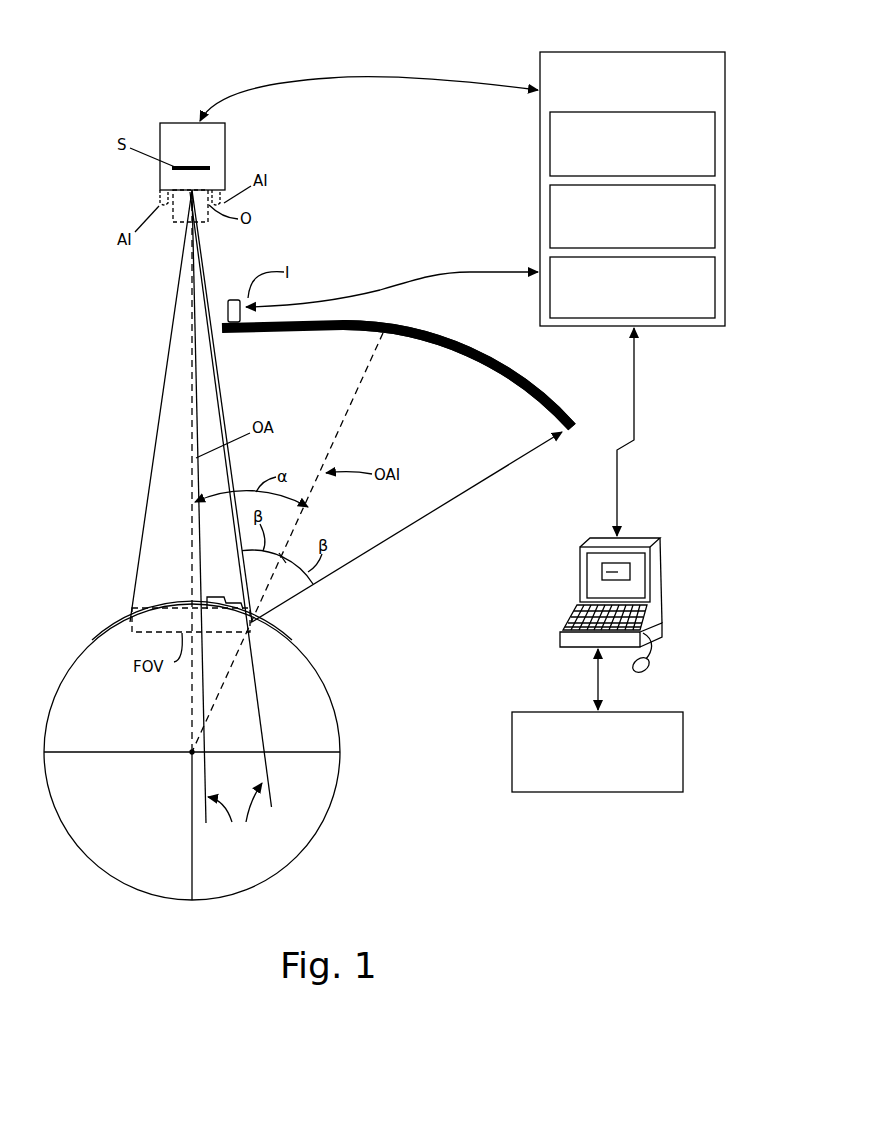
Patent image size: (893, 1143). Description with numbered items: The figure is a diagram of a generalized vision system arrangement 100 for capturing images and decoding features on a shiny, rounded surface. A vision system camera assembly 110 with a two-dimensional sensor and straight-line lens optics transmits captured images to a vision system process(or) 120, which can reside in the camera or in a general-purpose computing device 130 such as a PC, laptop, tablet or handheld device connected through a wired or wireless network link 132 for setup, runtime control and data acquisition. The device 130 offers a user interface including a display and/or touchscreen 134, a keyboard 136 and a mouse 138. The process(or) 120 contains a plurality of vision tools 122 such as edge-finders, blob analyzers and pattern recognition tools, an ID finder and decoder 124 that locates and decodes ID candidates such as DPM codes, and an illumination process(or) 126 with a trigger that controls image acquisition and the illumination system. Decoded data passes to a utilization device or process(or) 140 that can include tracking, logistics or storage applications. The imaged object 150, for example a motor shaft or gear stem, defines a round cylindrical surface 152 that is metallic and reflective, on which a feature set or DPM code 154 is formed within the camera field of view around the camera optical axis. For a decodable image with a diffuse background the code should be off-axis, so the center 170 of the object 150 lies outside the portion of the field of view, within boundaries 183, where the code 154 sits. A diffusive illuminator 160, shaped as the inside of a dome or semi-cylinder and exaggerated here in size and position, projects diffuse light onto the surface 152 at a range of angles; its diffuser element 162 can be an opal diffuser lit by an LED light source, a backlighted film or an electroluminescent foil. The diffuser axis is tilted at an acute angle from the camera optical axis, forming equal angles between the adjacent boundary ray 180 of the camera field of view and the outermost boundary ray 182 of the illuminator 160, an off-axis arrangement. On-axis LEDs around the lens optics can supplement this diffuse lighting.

The vision system arrangement 100 is at (434, 60).
The vision system camera assembly 110 is at (230, 137).
The vision system process(or) 120 is at (604, 52).
The vision tools 122 is at (715, 137).
The ID finder and decoder 124 is at (715, 210).
The illumination process(or) 126 is at (715, 275).
The general-purpose computing device 130 is at (613, 586).
The network link 132 is at (634, 432).
The display and/or touchscreen 134 is at (642, 585).
The keyboard 136 is at (576, 626).
The mouse 138 is at (650, 662).
The utilization device or process(or) 140 is at (536, 710).
The imaged object 150 is at (292, 688).
The rounded surface 152 is at (302, 647).
The feature set (DPM code) 154 is at (223, 596).
The diffusive illuminator 160 is at (445, 357).
The diffuser element 162 is at (433, 333).
The center of the cylindrical object 170 is at (190, 755).
The ray (adjacent boundary edge of camera FOV) 180 is at (224, 398).
The ray (outermost boundary edge of diffusive illuminator) 182 is at (420, 520).
The boundaries 183 is at (227, 519).